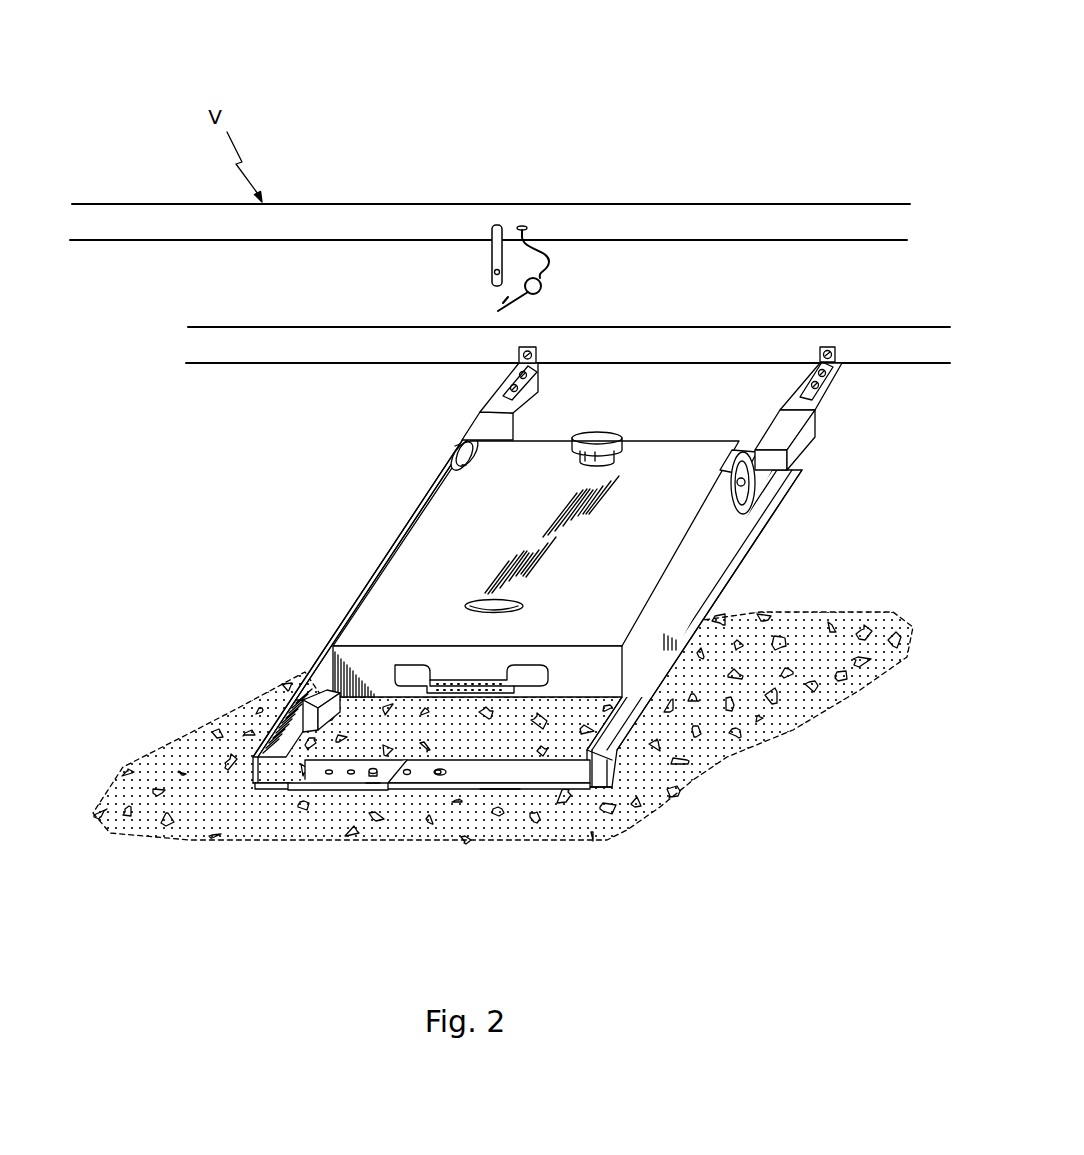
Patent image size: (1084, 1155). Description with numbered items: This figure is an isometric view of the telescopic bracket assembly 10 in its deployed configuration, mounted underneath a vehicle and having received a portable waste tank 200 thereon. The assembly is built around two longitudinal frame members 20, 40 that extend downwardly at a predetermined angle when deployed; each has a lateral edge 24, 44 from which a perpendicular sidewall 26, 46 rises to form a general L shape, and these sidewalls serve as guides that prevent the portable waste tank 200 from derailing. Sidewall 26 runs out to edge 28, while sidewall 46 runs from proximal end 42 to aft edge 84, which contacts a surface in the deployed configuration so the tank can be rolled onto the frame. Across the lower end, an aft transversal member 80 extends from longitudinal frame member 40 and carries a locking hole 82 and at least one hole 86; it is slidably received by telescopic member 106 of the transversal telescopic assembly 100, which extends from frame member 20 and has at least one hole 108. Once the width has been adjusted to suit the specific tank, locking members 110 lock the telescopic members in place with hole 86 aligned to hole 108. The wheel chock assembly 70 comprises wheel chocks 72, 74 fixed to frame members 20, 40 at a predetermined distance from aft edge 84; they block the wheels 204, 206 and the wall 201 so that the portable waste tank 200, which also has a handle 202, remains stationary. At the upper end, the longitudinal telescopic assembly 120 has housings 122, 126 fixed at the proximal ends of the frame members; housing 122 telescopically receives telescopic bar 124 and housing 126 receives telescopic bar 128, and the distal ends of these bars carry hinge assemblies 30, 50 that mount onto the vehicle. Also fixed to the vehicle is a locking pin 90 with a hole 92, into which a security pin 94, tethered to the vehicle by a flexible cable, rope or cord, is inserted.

The telescopic bracket assembly 10 is at (762, 102).
The longitudinal frame member 20 is at (301, 648).
The lateral edge 24 is at (240, 780).
The sidewall 26 is at (277, 730).
The edge 28 is at (270, 785).
The hinge assembly 30 is at (530, 347).
The longitudinal frame member 40 is at (724, 632).
The proximal end 42 is at (787, 483).
The lateral edge 44 is at (603, 763).
The sidewall 46 is at (733, 545).
The hinge assembly 50 is at (799, 370).
The wheel chock assembly 70 is at (246, 662).
The wheel chock 72 is at (301, 711).
The wheel chock 74 is at (600, 697).
The aft transversal member 80 is at (416, 849).
The locking hole 82 is at (441, 772).
The aft edge 84 is at (497, 787).
The hole 86 is at (413, 778).
The locking pin 90 is at (490, 268).
The hole 92 is at (491, 273).
The security pin 94 is at (544, 280).
The transversal telescopic assembly 100 is at (372, 789).
The telescopic member 106 is at (325, 778).
The hole 108 is at (350, 775).
The locking member 110 is at (373, 775).
The longitudinal telescopic assembly 120 is at (473, 355).
The housing 122 is at (483, 427).
The telescopic bar 124 is at (520, 408).
The housing 126 is at (777, 435).
The telescopic bar 128 is at (789, 385).
The portable waste tank 200 is at (537, 536).
The wall 201 is at (593, 792).
The handle 202 is at (450, 683).
The wheel 204 is at (462, 442).
The wheel 206 is at (748, 452).